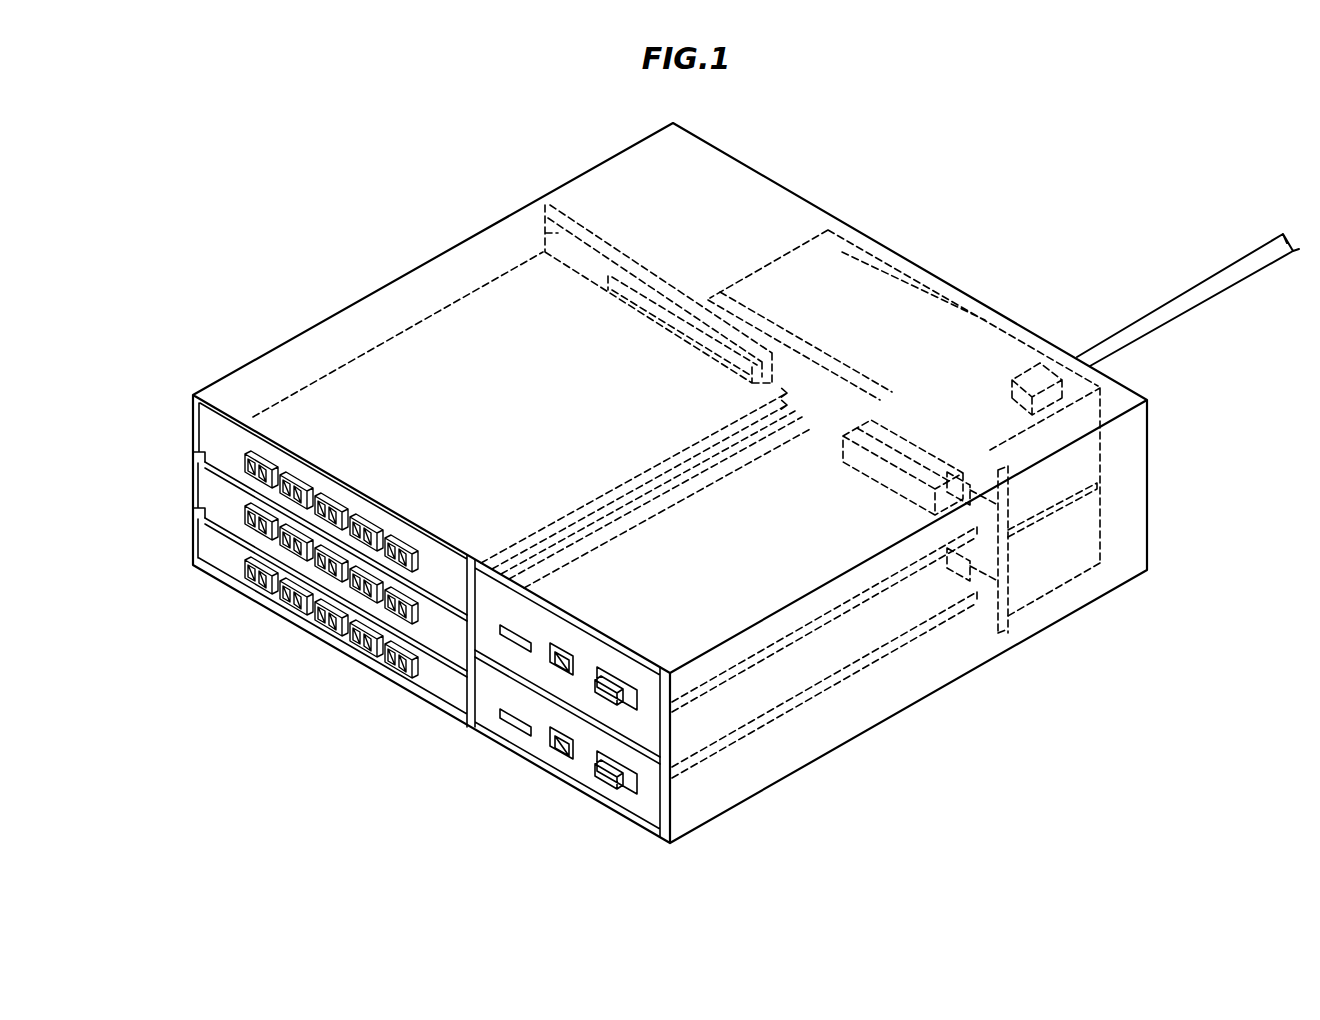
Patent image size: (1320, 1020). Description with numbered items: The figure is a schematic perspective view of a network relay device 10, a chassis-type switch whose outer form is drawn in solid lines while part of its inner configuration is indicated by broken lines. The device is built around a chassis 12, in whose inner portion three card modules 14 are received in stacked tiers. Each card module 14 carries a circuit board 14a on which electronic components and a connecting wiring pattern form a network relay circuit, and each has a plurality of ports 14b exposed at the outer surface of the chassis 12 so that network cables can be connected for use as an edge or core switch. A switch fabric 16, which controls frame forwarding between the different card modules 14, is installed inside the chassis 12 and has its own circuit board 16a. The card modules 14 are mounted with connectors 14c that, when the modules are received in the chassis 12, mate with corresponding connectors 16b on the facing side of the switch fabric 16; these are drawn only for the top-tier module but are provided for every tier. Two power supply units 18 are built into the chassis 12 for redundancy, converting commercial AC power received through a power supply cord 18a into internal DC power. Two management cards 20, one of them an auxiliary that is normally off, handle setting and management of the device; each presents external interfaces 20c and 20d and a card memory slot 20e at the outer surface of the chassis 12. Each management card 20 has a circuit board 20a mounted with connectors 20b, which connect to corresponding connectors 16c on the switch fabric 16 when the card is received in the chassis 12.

The network relay device 10 is at (965, 141).
The chassis 12 is at (712, 158).
The card module 14 is at (205, 442).
The circuit board 14a is at (372, 380).
The ports 14b is at (247, 513).
The connectors 14c is at (632, 321).
The switch fabric 16 is at (593, 230).
The circuit board 16a is at (542, 254).
The connectors 16b is at (700, 290).
The connectors 16c is at (1006, 617).
The power supply unit 18 is at (988, 317).
The power supply cord 18a is at (1190, 290).
The management card 20 is at (480, 731).
The circuit board 20a is at (737, 737).
The connectors 20b is at (985, 505).
The external interface 20c is at (603, 775).
The external interface 20d is at (560, 742).
The card memory slot 20e is at (517, 724).